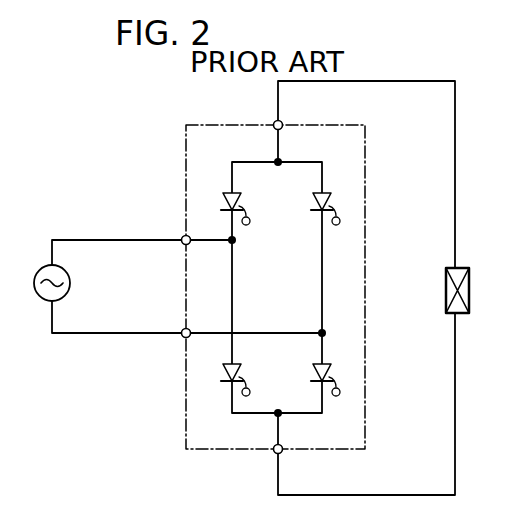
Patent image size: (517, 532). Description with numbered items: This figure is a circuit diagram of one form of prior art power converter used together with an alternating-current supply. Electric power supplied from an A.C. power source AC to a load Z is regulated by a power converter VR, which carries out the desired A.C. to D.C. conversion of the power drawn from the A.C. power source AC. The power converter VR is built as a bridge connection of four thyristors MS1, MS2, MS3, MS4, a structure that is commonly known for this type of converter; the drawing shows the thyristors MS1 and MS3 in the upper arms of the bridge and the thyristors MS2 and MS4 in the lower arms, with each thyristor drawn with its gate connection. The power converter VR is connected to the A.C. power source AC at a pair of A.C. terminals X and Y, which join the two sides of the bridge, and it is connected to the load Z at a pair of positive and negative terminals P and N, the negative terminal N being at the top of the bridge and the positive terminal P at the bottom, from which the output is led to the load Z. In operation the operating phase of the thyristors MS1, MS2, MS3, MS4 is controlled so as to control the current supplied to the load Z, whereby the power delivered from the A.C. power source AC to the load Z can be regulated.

The negative terminal N is at (282, 121).
The positive terminal P is at (280, 454).
The A.C. terminal X is at (182, 236).
The A.C. terminal Y is at (182, 329).
The power converter VR is at (344, 126).
The A.C. power source AC is at (69, 291).
The thyristor MS1 is at (240, 205).
The thyristor MS2 is at (240, 376).
The thyristor MS3 is at (329, 205).
The thyristor MS4 is at (329, 376).
The load Z is at (470, 284).